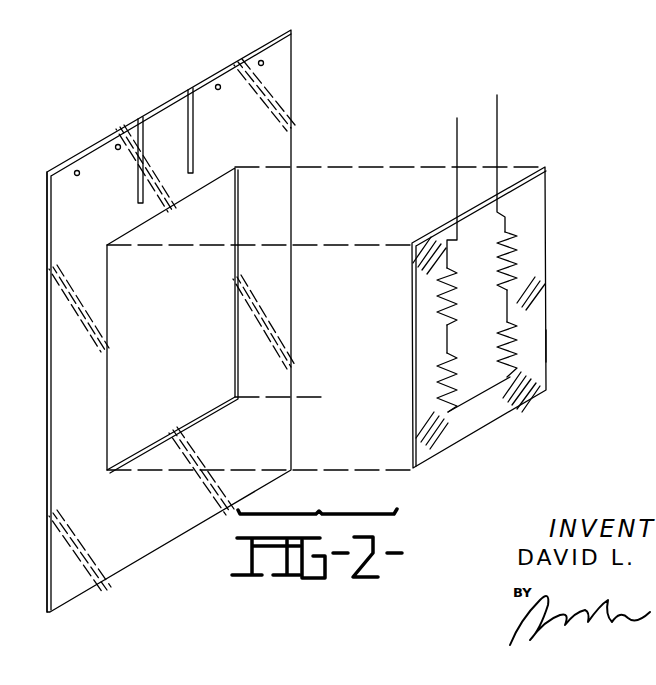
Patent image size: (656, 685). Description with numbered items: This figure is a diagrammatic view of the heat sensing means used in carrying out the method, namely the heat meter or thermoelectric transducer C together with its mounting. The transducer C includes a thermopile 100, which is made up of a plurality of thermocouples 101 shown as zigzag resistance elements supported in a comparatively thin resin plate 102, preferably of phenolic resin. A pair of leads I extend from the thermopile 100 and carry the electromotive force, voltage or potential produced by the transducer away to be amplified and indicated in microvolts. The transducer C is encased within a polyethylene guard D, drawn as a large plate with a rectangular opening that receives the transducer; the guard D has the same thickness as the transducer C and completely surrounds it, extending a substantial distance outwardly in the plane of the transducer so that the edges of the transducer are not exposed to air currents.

The polyethylene guard D is at (285, 74).
The thermoelectric transducer C is at (543, 207).
The leads I is at (457, 121).
The thermopile 100 is at (436, 305).
The thermocouples 101 is at (440, 284).
The resin plate 102 is at (543, 345).